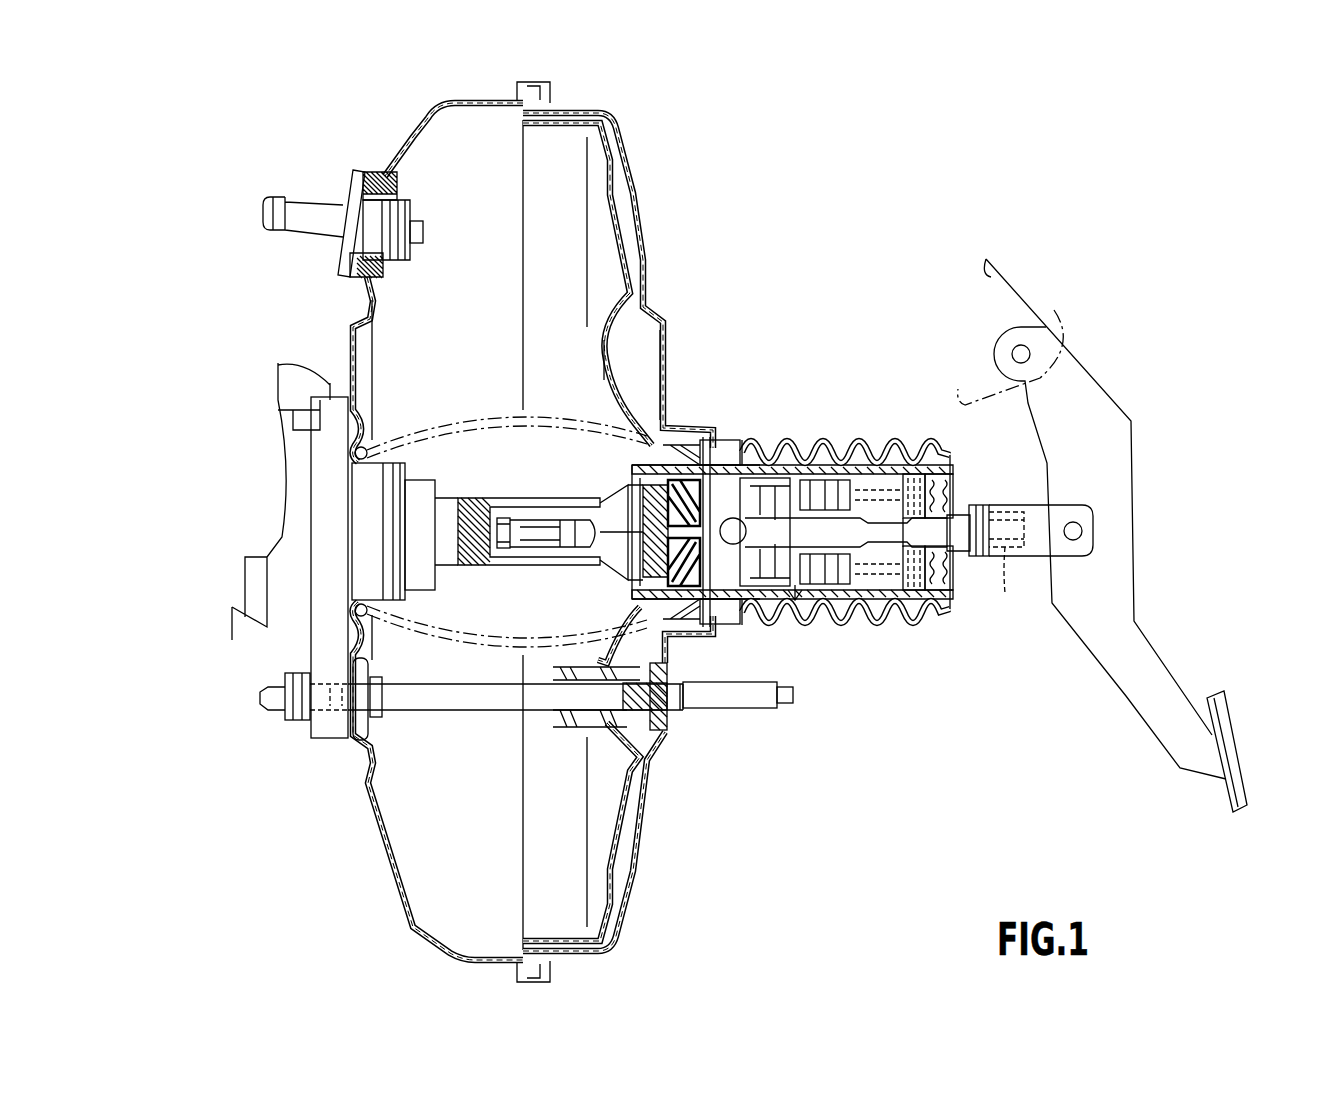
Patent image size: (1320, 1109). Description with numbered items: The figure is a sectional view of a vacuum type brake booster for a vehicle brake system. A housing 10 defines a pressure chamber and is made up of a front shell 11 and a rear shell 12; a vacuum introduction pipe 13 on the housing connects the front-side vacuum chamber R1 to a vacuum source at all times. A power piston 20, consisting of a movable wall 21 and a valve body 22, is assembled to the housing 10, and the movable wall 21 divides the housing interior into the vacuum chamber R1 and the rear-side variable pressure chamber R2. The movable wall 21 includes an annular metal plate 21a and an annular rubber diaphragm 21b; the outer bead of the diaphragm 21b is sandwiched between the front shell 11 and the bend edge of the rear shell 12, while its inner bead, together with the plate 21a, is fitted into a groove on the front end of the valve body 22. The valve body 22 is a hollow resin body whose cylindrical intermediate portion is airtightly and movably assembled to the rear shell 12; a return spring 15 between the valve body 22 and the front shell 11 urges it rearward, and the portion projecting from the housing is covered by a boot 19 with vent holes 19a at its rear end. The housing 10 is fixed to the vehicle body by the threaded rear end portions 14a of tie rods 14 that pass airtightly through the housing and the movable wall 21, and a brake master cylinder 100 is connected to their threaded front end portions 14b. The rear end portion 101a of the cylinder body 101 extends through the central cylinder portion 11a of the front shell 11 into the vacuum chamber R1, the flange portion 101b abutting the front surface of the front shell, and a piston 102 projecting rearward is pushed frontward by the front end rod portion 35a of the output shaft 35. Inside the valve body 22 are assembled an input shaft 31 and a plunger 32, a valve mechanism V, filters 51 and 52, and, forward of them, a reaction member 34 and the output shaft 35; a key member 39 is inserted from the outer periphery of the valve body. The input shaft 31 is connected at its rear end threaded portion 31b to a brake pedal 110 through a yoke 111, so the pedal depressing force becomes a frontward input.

The housing 10 is at (577, 108).
The front shell 11 is at (397, 153).
The central cylinder portion 11a is at (370, 445).
The rear shell 12 is at (623, 143).
The vacuum introduction pipe 13 is at (305, 227).
The tie rod 14 is at (526, 757).
The threaded rear end portion 14a is at (727, 703).
The threaded front end portion 14b is at (277, 697).
The return spring 15 is at (363, 373).
The boot 19 is at (860, 618).
The vent holes 19a is at (955, 585).
The power piston 20 is at (695, 431).
The movable wall 21 is at (623, 163).
The annular metal plate 21a is at (607, 360).
The annular rubber diaphragm 21b is at (630, 393).
The valve body 22 is at (860, 455).
The input shaft 31 is at (873, 547).
The rear end threaded portion 31b is at (962, 503).
The plunger 32 is at (767, 460).
The reaction member 34 is at (653, 500).
The output shaft 35 is at (529, 564).
The front end rod portion 35a is at (487, 540).
The key member 39 is at (707, 617).
The filter 51 is at (915, 474).
The filter 52 is at (950, 470).
The brake master cylinder 100 is at (275, 550).
The cylinder body 101 is at (293, 525).
The rear end portion 101a is at (400, 502).
The flange portion 101b is at (317, 643).
The piston 102 is at (483, 497).
The brake pedal 110 is at (1125, 586).
The yoke 111 is at (1040, 512).
The vacuum chamber R1 is at (470, 160).
The variable pressure chamber R2 is at (627, 233).
The valve mechanism V is at (793, 600).